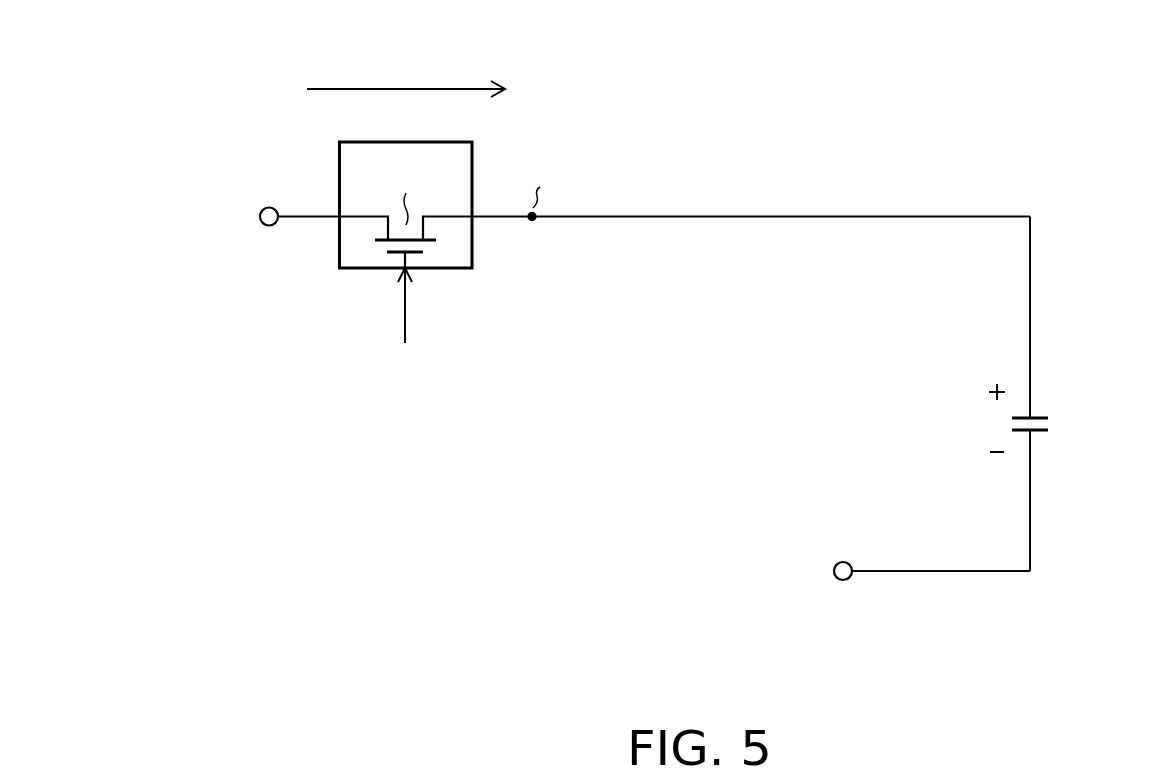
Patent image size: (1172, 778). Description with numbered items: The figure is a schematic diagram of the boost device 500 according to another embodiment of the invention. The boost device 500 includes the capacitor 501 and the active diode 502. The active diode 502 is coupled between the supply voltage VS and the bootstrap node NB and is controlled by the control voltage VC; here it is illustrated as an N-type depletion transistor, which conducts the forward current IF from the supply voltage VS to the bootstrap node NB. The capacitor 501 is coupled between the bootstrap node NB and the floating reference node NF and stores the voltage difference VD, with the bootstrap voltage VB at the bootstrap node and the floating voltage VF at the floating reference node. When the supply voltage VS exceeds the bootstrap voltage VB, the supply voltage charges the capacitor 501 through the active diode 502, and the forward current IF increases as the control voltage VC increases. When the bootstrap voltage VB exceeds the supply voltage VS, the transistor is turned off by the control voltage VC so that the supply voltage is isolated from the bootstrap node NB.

The boost device 500 is at (1140, 678).
The capacitor 501 is at (1050, 425).
The active diode 502 is at (340, 141).